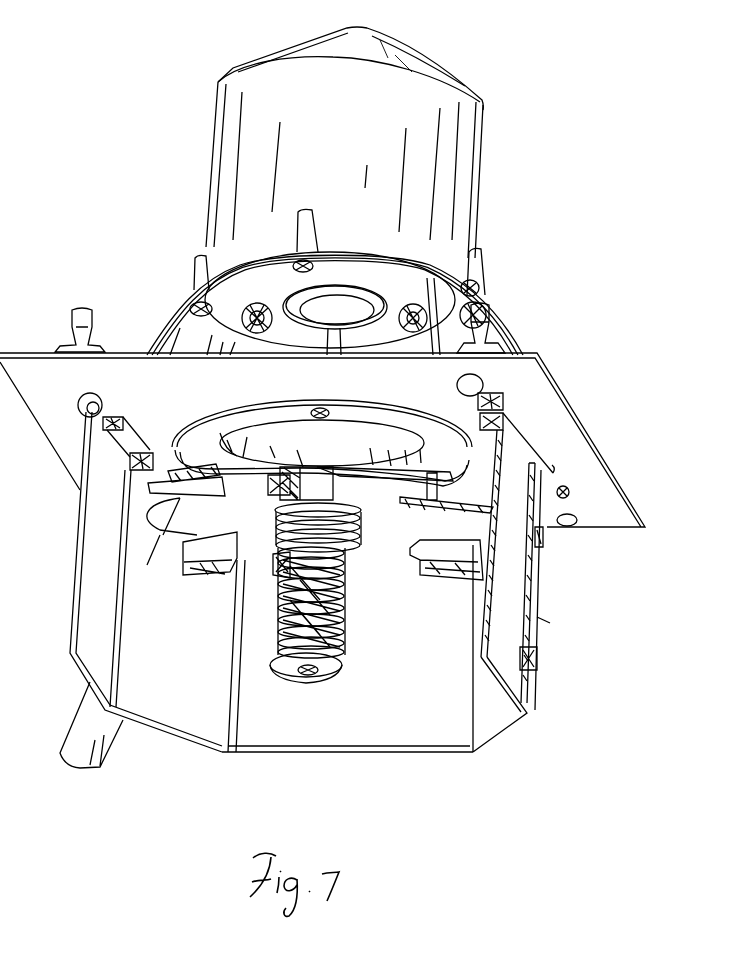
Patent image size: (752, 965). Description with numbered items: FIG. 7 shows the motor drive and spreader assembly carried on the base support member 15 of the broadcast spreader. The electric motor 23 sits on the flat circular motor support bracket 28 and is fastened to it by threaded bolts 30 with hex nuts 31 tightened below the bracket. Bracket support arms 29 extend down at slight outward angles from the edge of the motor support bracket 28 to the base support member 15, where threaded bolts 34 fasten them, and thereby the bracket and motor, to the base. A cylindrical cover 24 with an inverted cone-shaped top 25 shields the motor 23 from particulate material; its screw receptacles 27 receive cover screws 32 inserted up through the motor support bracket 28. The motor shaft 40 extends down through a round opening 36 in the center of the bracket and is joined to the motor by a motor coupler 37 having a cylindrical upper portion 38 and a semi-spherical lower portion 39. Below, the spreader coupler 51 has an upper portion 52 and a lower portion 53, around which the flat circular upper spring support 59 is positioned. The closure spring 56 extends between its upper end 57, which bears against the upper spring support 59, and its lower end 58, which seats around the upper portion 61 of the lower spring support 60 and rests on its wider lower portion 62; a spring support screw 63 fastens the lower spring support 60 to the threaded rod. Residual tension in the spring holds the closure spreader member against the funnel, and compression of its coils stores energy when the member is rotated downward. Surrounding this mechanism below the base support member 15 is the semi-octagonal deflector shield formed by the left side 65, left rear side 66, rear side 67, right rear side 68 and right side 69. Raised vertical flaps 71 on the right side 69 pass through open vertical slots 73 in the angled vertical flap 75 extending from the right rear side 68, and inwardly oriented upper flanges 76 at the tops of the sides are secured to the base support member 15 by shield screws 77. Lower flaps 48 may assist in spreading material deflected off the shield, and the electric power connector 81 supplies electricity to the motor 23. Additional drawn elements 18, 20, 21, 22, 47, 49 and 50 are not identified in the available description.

The base support member 15 is at (322, 440).
The hub 18 is at (342, 457).
The nut 20 is at (592, 500).
The bolt 21 is at (492, 328).
The ring 22 is at (316, 407).
The electric motor 23 is at (344, 142).
The cylindrical cover 24 is at (212, 135).
The inverted cone-shaped top 25 is at (360, 20).
The screw receptacles 27 is at (482, 262).
The motor support bracket 28 is at (262, 312).
The bracket support arms 29 is at (462, 310).
The threaded bolts 30 is at (428, 322).
The hex nuts 31 is at (413, 305).
The cover screws 32 is at (196, 340).
The threaded bolts 34 is at (568, 487).
The round opening 36 is at (370, 298).
The motor coupler 37 is at (335, 307).
The cylindrical upper portion 38 is at (353, 296).
The semi-spherical lower portion 39 is at (345, 333).
The motor shaft 40 is at (233, 530).
The wing 47 is at (442, 468).
The lower flaps 48 is at (478, 497).
The hub plate 49 is at (168, 543).
The coil spring 50 is at (350, 564).
The spreader coupler 51 is at (282, 584).
The spreader coupler's upper portion 52 is at (362, 522).
The spreader coupler's lower portion 53 is at (273, 556).
The closure spring 56 is at (280, 618).
The upper end of the closure spring 57 is at (335, 506).
The lower end of the closure spring 58 is at (279, 652).
The upper spring support 59 is at (306, 668).
The lower spring support 60 is at (318, 680).
The lower spring support's upper portion 61 is at (338, 640).
The lower spring support's lower portion 62 is at (345, 667).
The spring support screw 63 is at (308, 682).
The left side 65 is at (146, 582).
The left rear side 66 is at (203, 656).
The rear side 67 is at (347, 648).
The right rear side 68 is at (500, 704).
The right side 69 is at (511, 570).
The raised vertical flaps 71 is at (540, 660).
The open vertical slots 73 is at (540, 672).
The angled vertical flap 75 is at (551, 623).
The upper flanges 76 is at (490, 470).
The shield screws 77 is at (477, 418).
The electric power connector 81 is at (63, 720).